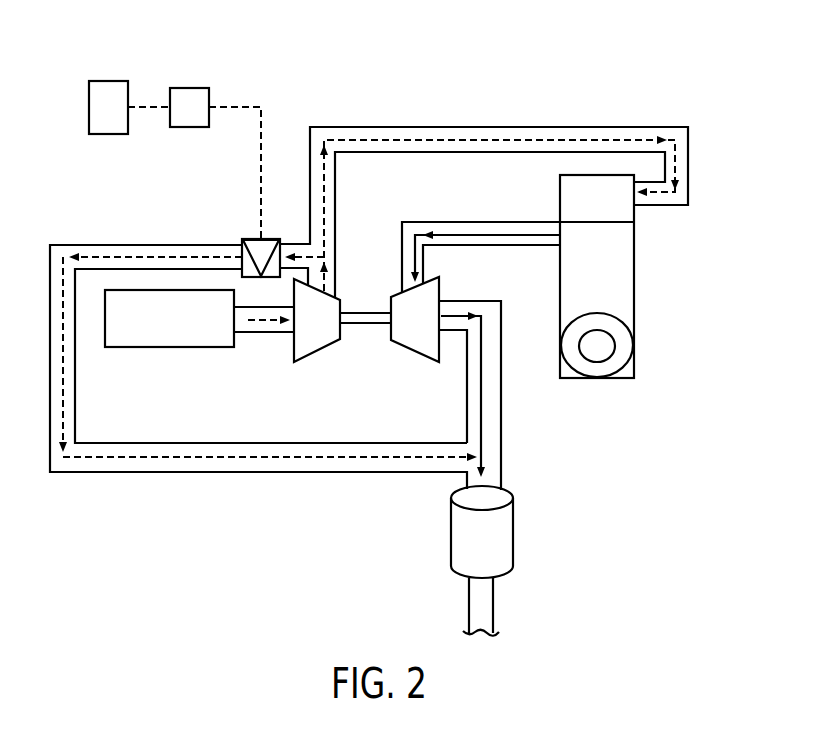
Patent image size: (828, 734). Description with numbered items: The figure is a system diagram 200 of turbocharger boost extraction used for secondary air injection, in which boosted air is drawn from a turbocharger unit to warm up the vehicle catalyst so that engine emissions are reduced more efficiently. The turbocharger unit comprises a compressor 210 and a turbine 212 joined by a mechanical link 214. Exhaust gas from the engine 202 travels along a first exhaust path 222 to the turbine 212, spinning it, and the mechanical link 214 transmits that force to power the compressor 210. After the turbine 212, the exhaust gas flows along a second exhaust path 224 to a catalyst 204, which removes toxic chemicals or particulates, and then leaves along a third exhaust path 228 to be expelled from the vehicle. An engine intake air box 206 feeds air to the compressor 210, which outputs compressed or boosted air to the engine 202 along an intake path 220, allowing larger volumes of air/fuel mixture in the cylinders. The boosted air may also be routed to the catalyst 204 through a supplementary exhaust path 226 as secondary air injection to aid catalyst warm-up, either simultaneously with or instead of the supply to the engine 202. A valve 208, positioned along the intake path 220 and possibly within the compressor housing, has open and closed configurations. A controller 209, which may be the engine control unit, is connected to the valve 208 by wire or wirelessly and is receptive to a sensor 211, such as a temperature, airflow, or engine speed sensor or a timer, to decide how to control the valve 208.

The system diagram 200 is at (640, 71).
The engine 202 is at (635, 286).
The catalyst 204 is at (514, 540).
The engine intake air box 206 is at (168, 348).
The valve 208 is at (250, 238).
The controller 209 is at (190, 88).
The compressor 210 is at (318, 354).
The sensor 211 is at (110, 80).
The turbine 212 is at (440, 287).
The mechanical link 214 is at (364, 310).
The intake path 220 is at (505, 126).
The first exhaust path 222 is at (468, 221).
The second exhaust path 224 is at (502, 408).
The supplementary exhaust path 226 is at (202, 472).
The third exhaust path 228 is at (495, 606).